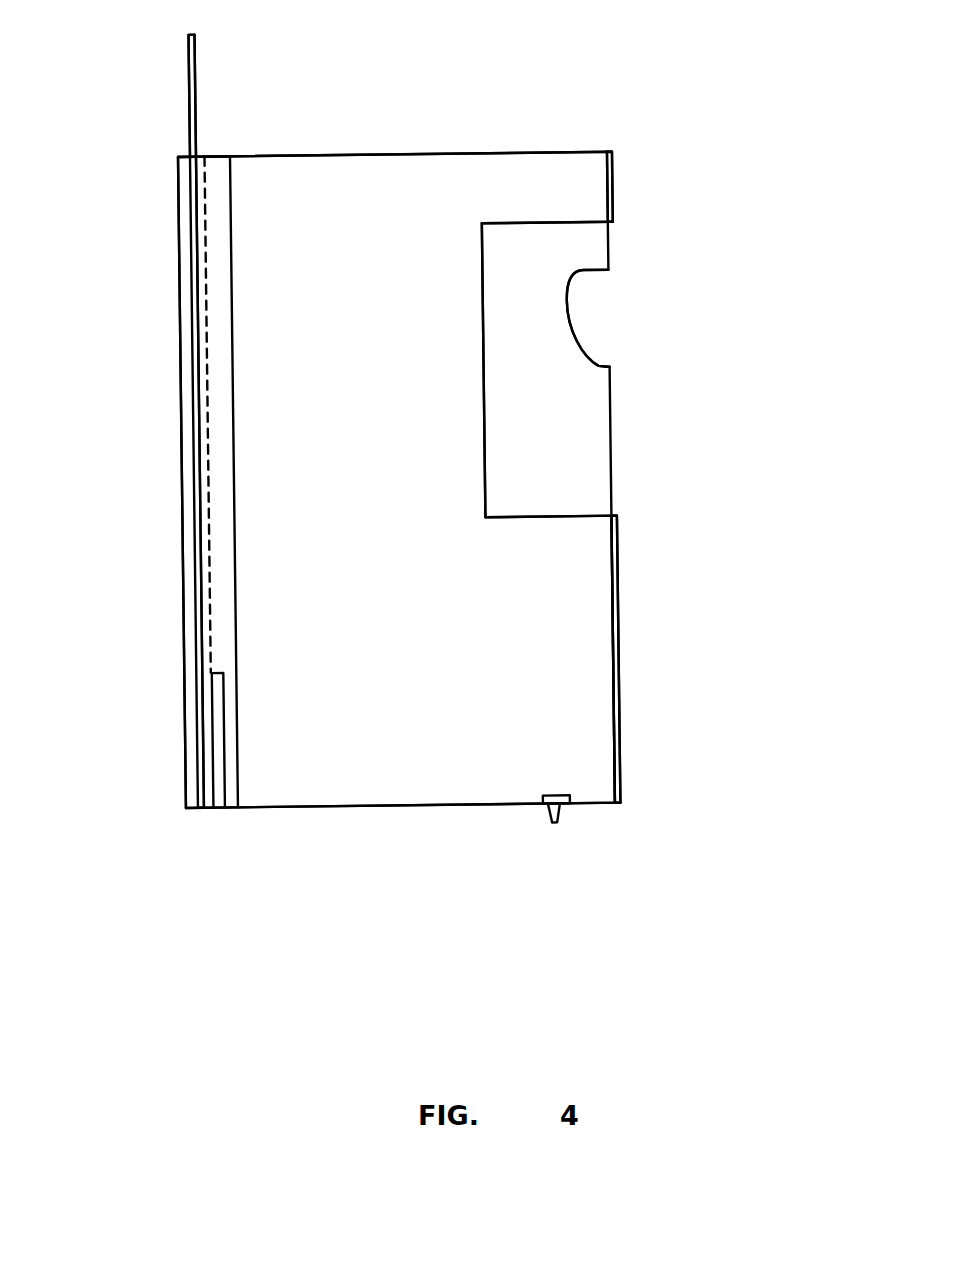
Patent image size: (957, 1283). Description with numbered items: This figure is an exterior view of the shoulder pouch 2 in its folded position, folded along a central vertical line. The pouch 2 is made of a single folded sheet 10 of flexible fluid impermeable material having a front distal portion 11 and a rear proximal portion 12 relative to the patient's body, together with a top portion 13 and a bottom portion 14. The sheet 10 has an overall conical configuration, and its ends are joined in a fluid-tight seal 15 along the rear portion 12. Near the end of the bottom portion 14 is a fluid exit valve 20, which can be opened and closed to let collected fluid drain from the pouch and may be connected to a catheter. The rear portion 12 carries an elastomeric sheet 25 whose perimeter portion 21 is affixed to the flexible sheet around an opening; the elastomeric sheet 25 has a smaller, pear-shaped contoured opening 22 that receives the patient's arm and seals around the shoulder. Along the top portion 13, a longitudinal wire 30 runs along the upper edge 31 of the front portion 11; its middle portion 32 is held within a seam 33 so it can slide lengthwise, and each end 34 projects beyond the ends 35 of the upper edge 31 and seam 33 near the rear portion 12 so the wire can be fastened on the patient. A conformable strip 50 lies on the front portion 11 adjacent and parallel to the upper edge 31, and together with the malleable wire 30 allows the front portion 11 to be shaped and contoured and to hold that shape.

The shoulder pouch 2 is at (408, 143).
The flexible sheet 10 is at (580, 683).
The front distal portion 11 is at (300, 765).
The rear proximal portion 12 is at (567, 172).
The top portion 13 is at (265, 647).
The bottom portion 14 is at (598, 768).
The fluid-tight seal 15 is at (613, 570).
The fluid exit valve 20 is at (560, 806).
The perimeter portion of the elastomeric sheet 21 is at (567, 236).
The contoured opening 22 is at (583, 318).
The elastomeric sheet 25 is at (575, 455).
The longitudinal wire 30 is at (187, 342).
The upper edge 31 is at (183, 397).
The middle portion of the wire 32 is at (200, 765).
The seam 33 is at (220, 535).
The wire end 34 is at (198, 62).
The ends of the upper edge 35 is at (180, 157).
The conformable strip 50 is at (218, 810).